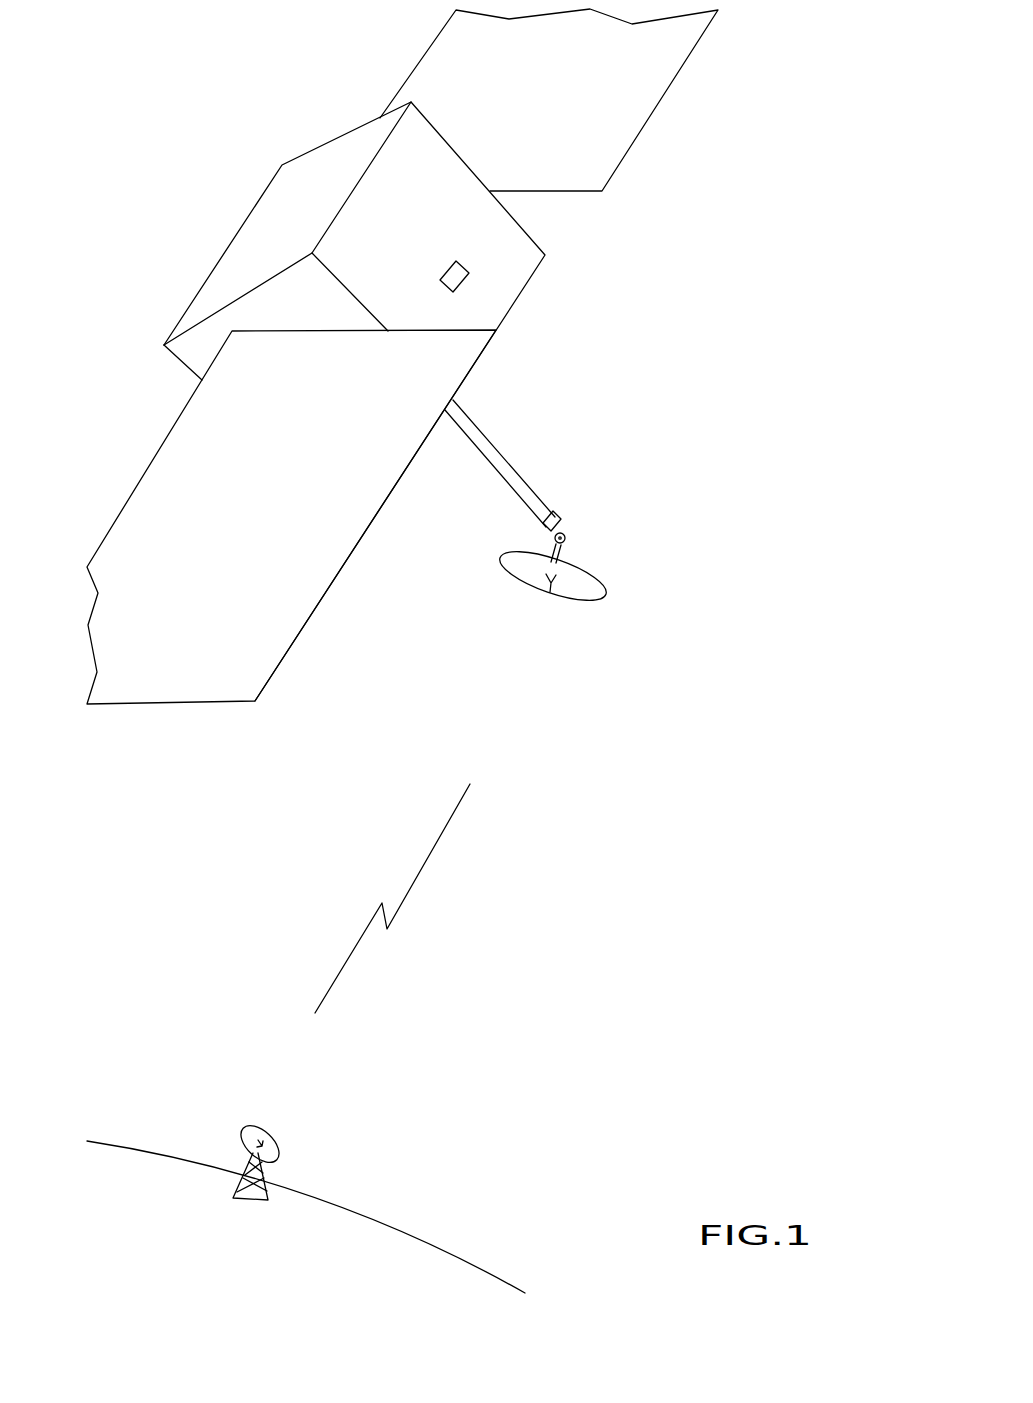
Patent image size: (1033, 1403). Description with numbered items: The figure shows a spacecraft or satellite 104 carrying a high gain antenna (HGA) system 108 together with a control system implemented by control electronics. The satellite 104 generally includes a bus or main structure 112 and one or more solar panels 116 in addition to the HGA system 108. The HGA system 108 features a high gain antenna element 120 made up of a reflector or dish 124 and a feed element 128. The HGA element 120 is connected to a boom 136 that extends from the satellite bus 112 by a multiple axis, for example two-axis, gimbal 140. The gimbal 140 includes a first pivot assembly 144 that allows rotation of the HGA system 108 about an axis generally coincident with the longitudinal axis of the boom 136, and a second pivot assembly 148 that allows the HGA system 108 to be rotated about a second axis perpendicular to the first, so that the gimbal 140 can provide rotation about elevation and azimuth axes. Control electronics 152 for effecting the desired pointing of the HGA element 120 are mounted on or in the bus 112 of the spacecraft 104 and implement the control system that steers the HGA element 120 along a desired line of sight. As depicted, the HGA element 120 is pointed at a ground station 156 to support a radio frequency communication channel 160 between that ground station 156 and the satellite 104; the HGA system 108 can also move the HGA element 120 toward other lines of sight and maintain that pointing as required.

The spacecraft or satellite 104 is at (255, 161).
The high gain antenna (HGA) system 108 is at (590, 628).
The bus or main structure 112 is at (252, 237).
The solar panels 116 is at (637, 117).
The high gain antenna element 120 is at (595, 585).
The reflector or dish 124 is at (518, 570).
The feed element 128 is at (548, 588).
The boom 136 is at (487, 432).
The gimbal 140 is at (596, 519).
The first pivot assembly 144 is at (558, 522).
The second pivot assembly 148 is at (567, 537).
The control electronics 152 is at (463, 280).
The ground station 156 is at (277, 1142).
The radio frequency (RF) communication channel 160 is at (408, 890).